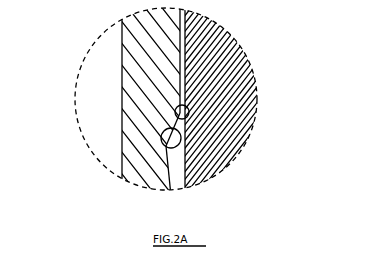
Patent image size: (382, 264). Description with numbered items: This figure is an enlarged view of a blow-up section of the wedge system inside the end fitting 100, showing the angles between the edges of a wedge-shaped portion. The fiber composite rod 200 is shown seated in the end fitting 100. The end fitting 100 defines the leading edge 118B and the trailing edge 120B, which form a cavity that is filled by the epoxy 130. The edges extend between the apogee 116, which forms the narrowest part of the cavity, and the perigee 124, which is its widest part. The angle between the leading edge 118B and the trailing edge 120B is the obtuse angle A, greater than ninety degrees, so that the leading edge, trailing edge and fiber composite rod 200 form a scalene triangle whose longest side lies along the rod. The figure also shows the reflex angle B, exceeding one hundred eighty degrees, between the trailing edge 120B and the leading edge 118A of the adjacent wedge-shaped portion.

The end fitting 100 is at (148, 147).
The apogee 116 is at (244, 62).
The leading edge 118A is at (180, 42).
The leading edge 118B is at (163, 172).
The trailing edge 120B is at (177, 118).
The perigee 124 is at (164, 136).
The epoxy 130 is at (184, 188).
The fiber composite rod 200 is at (248, 135).